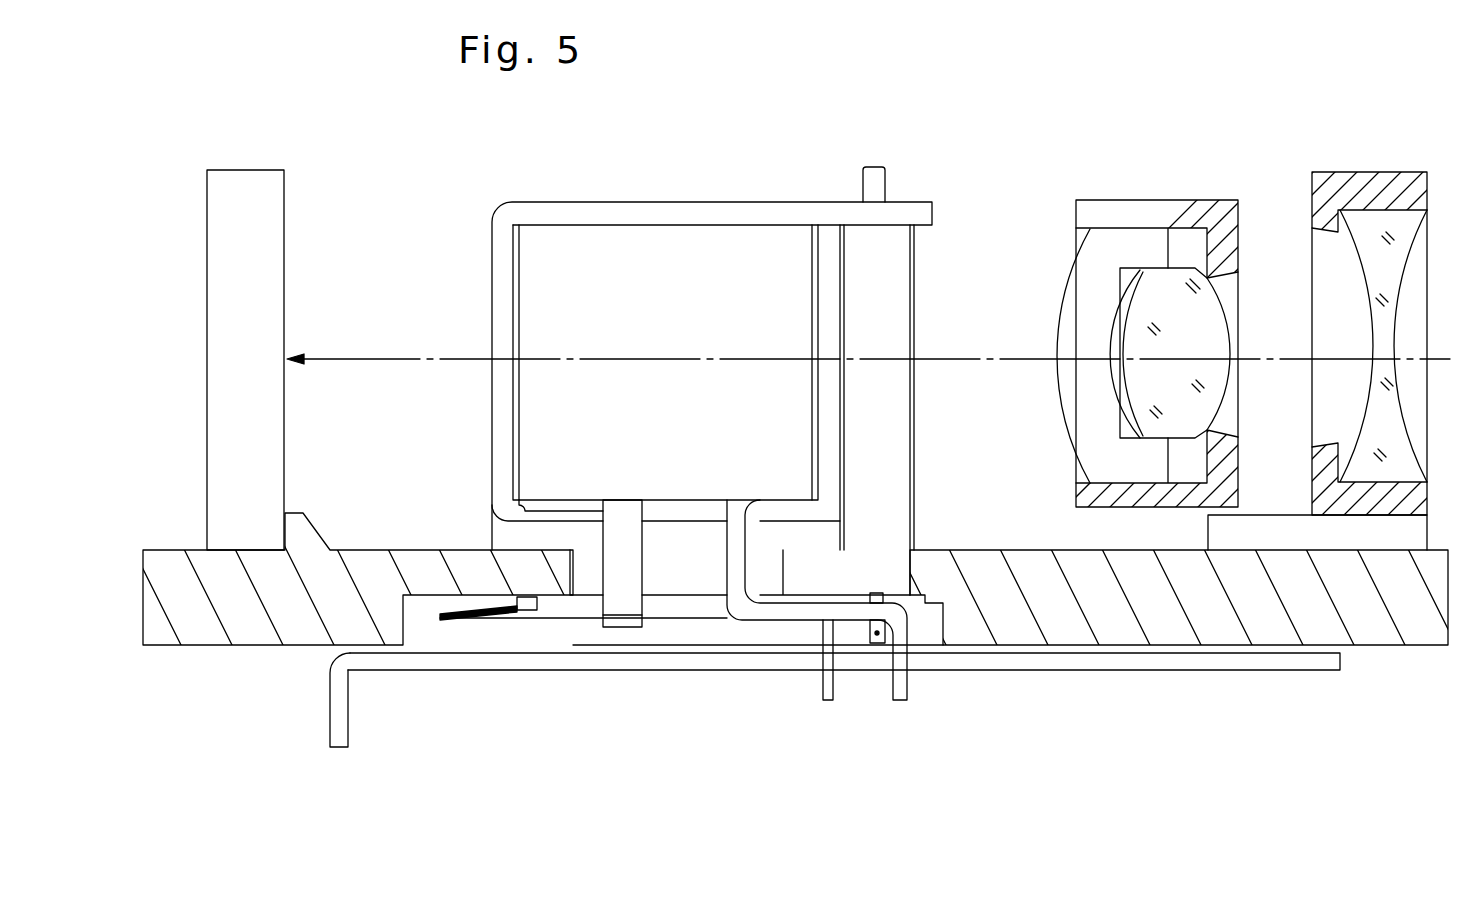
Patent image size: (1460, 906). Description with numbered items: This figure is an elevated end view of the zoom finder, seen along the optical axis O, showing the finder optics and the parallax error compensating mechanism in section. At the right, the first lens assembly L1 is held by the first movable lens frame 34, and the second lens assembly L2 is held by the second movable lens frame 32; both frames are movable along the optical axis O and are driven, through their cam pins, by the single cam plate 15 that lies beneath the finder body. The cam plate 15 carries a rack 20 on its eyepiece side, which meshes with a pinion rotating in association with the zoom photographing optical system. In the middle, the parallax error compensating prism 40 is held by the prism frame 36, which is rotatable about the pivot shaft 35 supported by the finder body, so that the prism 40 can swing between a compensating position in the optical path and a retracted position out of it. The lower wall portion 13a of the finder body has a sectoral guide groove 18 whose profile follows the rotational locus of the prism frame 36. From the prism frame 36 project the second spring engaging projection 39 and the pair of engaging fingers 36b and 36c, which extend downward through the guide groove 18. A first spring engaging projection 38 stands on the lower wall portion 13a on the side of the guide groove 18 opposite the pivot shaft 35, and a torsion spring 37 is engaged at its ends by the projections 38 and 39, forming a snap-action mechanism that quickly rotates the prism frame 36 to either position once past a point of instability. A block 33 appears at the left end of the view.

The lower wall portion 13a is at (1225, 627).
The cam plate 15 is at (1034, 677).
The sectoral guide groove 18 is at (680, 573).
The rack 20 is at (327, 727).
The second movable lens frame 32 is at (1128, 198).
The light receiving element block 33 is at (248, 182).
The first movable lens frame 34 is at (1342, 183).
The pivot shaft 35 is at (882, 170).
The prism frame 36 is at (787, 200).
The engaging finger 36b is at (822, 688).
The engaging finger 36c is at (908, 693).
The torsion spring 37 is at (460, 622).
The first spring engaging projection 38 is at (535, 612).
The second spring engaging projection 39 is at (622, 627).
The parallax error compensating prism 40 is at (722, 247).
The first lens assembly L1 is at (1390, 217).
The second lens assembly L2 is at (1175, 287).
The optical axis O is at (975, 352).